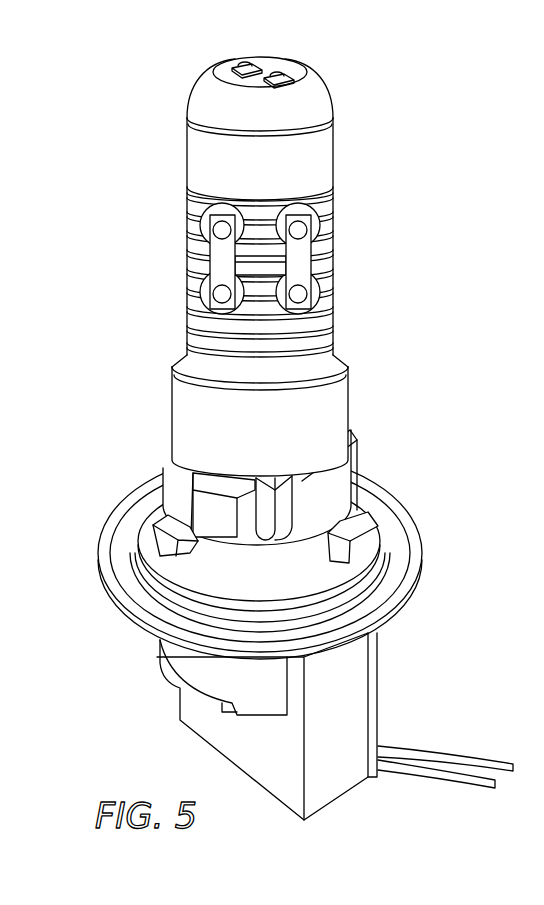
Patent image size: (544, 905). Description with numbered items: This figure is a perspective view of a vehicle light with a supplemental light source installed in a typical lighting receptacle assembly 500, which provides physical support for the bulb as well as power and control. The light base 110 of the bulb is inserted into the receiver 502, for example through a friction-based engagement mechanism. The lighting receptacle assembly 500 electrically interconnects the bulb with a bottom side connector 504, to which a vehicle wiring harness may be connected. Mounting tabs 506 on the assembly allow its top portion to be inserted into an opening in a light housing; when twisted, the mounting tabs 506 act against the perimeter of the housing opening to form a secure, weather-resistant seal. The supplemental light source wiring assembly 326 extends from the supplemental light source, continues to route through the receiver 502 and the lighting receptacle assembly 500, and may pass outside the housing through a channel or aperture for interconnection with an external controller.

The light base 110 is at (195, 416).
The lighting receptacle assembly 500 is at (115, 605).
The receiver 502 is at (338, 487).
The bottom side connector 504 is at (200, 738).
The mounting tabs 506 is at (158, 548).
The supplemental light source wiring assembly 326 is at (431, 748).